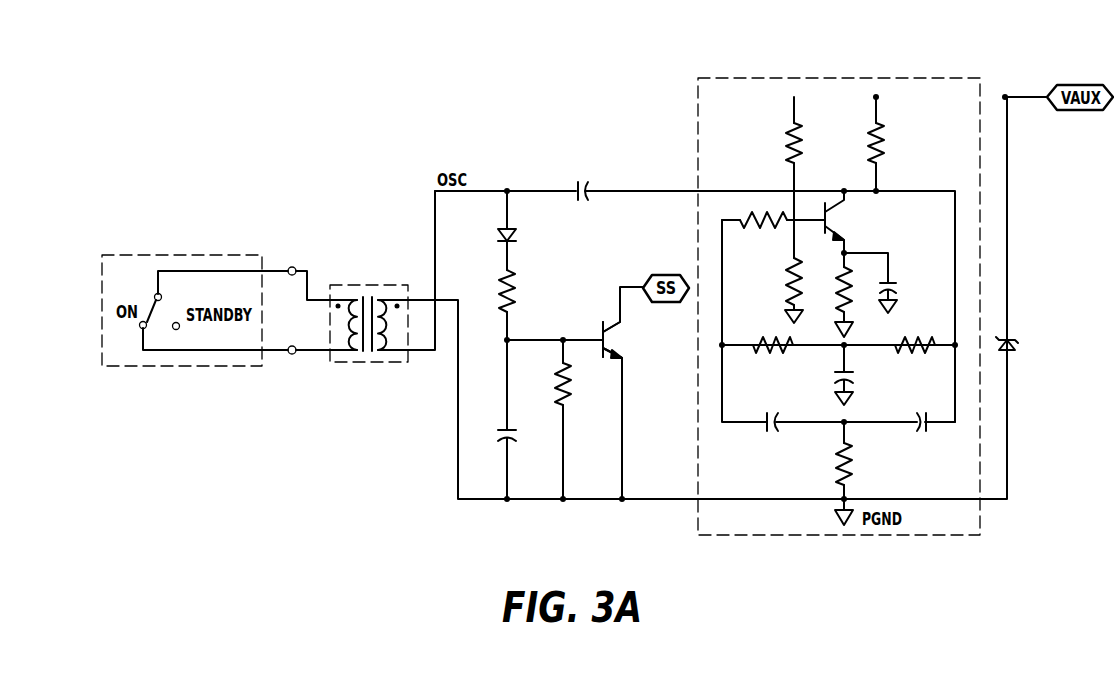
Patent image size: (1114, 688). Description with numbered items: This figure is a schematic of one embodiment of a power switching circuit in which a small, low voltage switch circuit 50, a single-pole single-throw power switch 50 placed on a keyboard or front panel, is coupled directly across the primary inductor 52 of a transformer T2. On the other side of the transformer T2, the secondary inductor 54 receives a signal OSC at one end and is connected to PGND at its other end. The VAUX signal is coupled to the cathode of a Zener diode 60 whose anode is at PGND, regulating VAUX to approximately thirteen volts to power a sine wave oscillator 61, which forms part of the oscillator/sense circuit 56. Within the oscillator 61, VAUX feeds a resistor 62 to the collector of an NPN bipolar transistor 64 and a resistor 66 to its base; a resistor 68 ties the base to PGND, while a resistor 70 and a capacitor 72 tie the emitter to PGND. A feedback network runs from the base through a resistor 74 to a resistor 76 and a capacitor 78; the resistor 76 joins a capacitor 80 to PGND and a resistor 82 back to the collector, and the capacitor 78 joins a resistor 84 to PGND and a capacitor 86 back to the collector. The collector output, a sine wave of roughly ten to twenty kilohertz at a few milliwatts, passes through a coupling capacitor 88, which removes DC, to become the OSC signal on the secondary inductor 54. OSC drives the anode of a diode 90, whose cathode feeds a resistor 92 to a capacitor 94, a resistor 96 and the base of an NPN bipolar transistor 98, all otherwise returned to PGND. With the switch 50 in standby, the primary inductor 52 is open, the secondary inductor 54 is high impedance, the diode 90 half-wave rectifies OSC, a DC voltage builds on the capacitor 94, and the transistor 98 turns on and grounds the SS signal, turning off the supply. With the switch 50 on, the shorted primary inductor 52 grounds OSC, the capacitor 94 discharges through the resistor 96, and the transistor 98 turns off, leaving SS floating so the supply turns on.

The power switch 50 is at (166, 254).
The primary inductor 52 is at (352, 328).
The secondary inductor 54 is at (393, 327).
The oscillator/sense circuit 56 is at (593, 112).
The Zener diode 60 is at (1012, 338).
The sine wave oscillator 61 is at (941, 77).
The resistor 62 is at (873, 125).
The NPN bipolar transistor 64 is at (833, 212).
The resistor 66 is at (790, 125).
The resistor 68 is at (788, 280).
The resistor 70 is at (838, 290).
The capacitor 72 is at (893, 284).
The resistor 74 is at (762, 225).
The resistor 76 is at (778, 352).
The capacitor 78 is at (776, 412).
The capacitor 80 is at (855, 377).
The resistor 82 is at (918, 340).
The resistor 84 is at (838, 458).
The capacitor 86 is at (918, 432).
The coupling capacitor 88 is at (584, 172).
The diode 90 is at (518, 232).
The resistor 92 is at (518, 278).
The capacitor 94 is at (500, 434).
The resistor 96 is at (561, 379).
The NPN bipolar transistor 98 is at (625, 340).
The transformer T2 is at (363, 285).